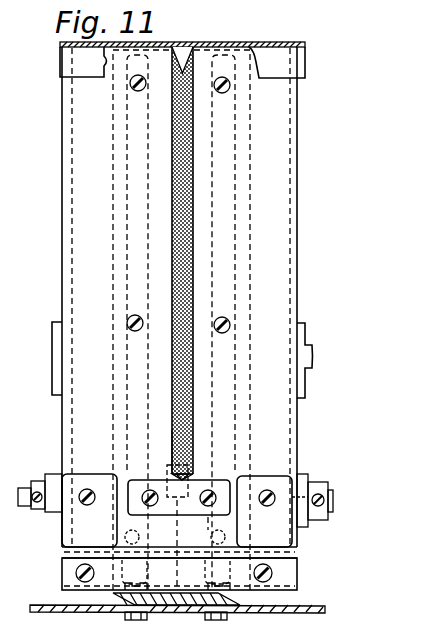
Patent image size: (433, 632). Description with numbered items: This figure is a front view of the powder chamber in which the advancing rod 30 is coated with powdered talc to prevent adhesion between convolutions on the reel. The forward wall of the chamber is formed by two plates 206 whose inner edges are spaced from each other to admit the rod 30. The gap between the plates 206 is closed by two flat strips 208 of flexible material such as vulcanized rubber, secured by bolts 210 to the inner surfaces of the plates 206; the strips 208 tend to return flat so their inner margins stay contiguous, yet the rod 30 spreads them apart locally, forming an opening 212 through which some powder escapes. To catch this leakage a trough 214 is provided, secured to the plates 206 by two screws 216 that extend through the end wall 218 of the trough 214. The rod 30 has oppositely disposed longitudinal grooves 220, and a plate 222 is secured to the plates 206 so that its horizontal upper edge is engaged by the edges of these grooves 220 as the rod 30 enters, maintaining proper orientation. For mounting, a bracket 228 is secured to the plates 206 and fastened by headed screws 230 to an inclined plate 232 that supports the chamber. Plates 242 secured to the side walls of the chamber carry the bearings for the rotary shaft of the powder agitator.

The plates 206 is at (88, 165).
The flat strips 208 is at (185, 193).
The bolts 210 is at (132, 89).
The opening 212 is at (168, 440).
The rod 30 is at (172, 478).
The longitudinal grooves 220 is at (185, 476).
The plate 222 is at (210, 483).
The screws 216 is at (90, 502).
The end wall 218 is at (82, 536).
The trough 214 is at (60, 545).
The bracket 228 is at (72, 567).
The inclined plate 232 is at (95, 611).
The headed screws 230 is at (215, 619).
The plates 242 is at (57, 340).